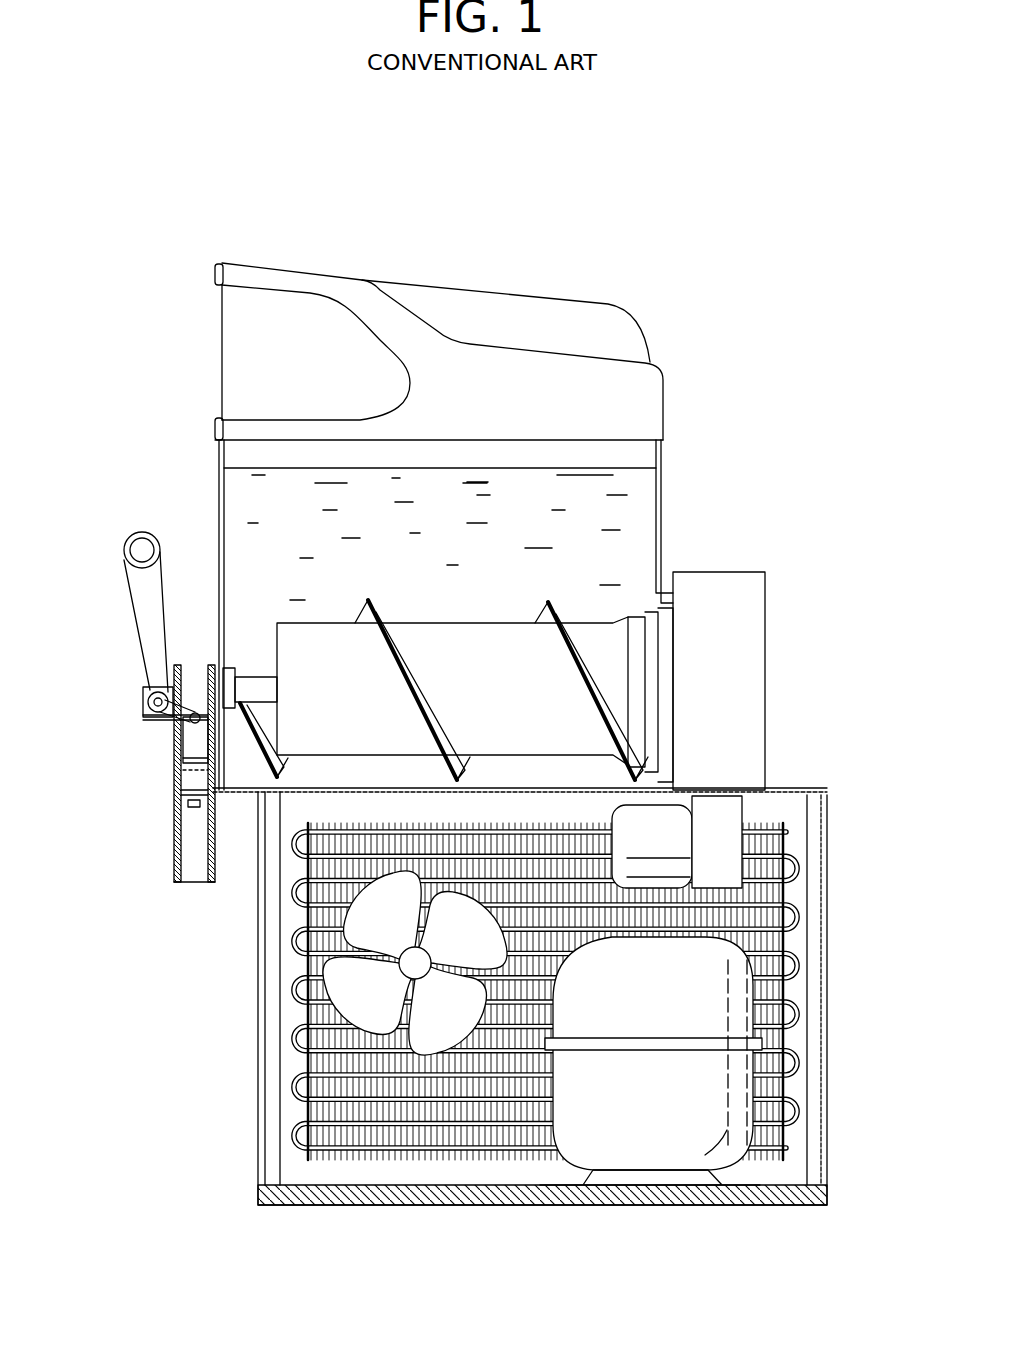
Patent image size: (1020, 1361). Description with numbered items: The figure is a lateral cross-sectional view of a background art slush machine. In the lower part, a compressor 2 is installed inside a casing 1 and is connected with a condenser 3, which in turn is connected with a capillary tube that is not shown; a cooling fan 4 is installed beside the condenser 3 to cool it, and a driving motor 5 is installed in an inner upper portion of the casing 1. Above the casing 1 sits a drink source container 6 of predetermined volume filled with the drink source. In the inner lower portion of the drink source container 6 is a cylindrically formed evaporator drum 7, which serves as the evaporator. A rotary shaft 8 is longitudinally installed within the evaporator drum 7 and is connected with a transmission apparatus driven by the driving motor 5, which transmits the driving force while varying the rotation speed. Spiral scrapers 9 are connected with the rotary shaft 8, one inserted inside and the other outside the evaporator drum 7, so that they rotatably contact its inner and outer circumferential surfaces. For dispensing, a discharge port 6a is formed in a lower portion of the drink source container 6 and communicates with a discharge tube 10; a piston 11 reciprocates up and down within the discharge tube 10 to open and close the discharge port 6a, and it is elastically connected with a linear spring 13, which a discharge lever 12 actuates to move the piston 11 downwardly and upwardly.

The casing 1 is at (828, 888).
The compressor 2 is at (585, 1133).
The condenser 3 is at (318, 1110).
The cooling fan 4 is at (345, 992).
The driving motor 5 is at (668, 828).
The drink source container 6 is at (668, 484).
The discharge port 6a is at (177, 748).
The evaporator drum 7 is at (293, 632).
The rotary shaft 8 is at (255, 683).
The spiral scrapers 9 is at (560, 615).
The discharge tube 10 is at (170, 855).
The piston 11 is at (187, 775).
The discharge lever 12 is at (145, 593).
The linear spring 13 is at (147, 672).